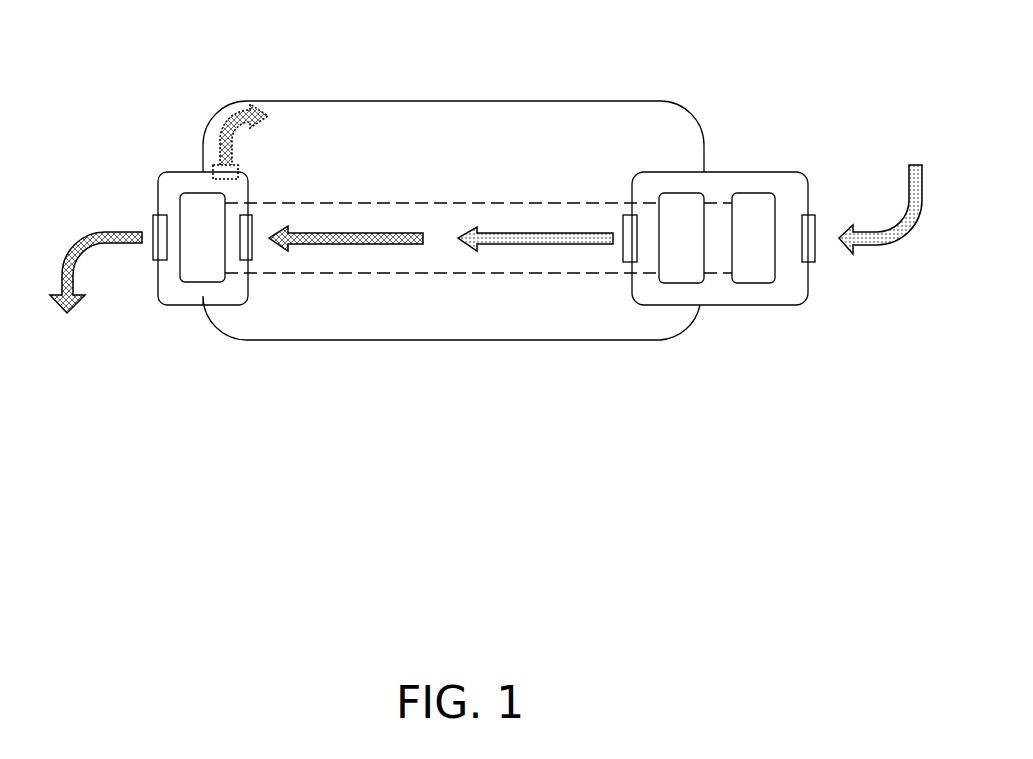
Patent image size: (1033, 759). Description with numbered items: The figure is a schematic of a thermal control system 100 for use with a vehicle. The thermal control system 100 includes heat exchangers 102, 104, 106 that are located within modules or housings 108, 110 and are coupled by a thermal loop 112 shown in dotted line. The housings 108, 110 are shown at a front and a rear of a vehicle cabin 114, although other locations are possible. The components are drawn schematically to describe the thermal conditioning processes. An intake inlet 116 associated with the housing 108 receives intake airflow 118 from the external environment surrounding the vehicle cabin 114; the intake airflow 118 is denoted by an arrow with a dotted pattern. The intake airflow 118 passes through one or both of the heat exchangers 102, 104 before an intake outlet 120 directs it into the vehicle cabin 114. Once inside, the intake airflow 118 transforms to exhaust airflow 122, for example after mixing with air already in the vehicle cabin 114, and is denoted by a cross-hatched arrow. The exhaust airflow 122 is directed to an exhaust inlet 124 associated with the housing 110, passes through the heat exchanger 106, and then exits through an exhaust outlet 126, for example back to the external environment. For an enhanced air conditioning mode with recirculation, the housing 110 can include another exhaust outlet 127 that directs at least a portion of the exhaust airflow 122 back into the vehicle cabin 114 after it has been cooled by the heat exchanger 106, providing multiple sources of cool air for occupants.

The thermal control system 100 is at (631, 69).
The heat exchanger 102 is at (752, 283).
The heat exchanger 104 is at (683, 283).
The heat exchanger 106 is at (197, 283).
The housing 108 is at (755, 172).
The housing 110 is at (165, 172).
The thermal loop 112 is at (453, 274).
The vehicle cabin 114 is at (298, 100).
The intake inlet 116 is at (819, 214).
The intake airflow 118 is at (905, 239).
The intake outlet 120 is at (620, 263).
The exhaust airflow 122 is at (100, 229).
The exhaust inlet 124 is at (253, 215).
The exhaust outlet 126 is at (150, 262).
The exhaust outlet 127 is at (239, 165).